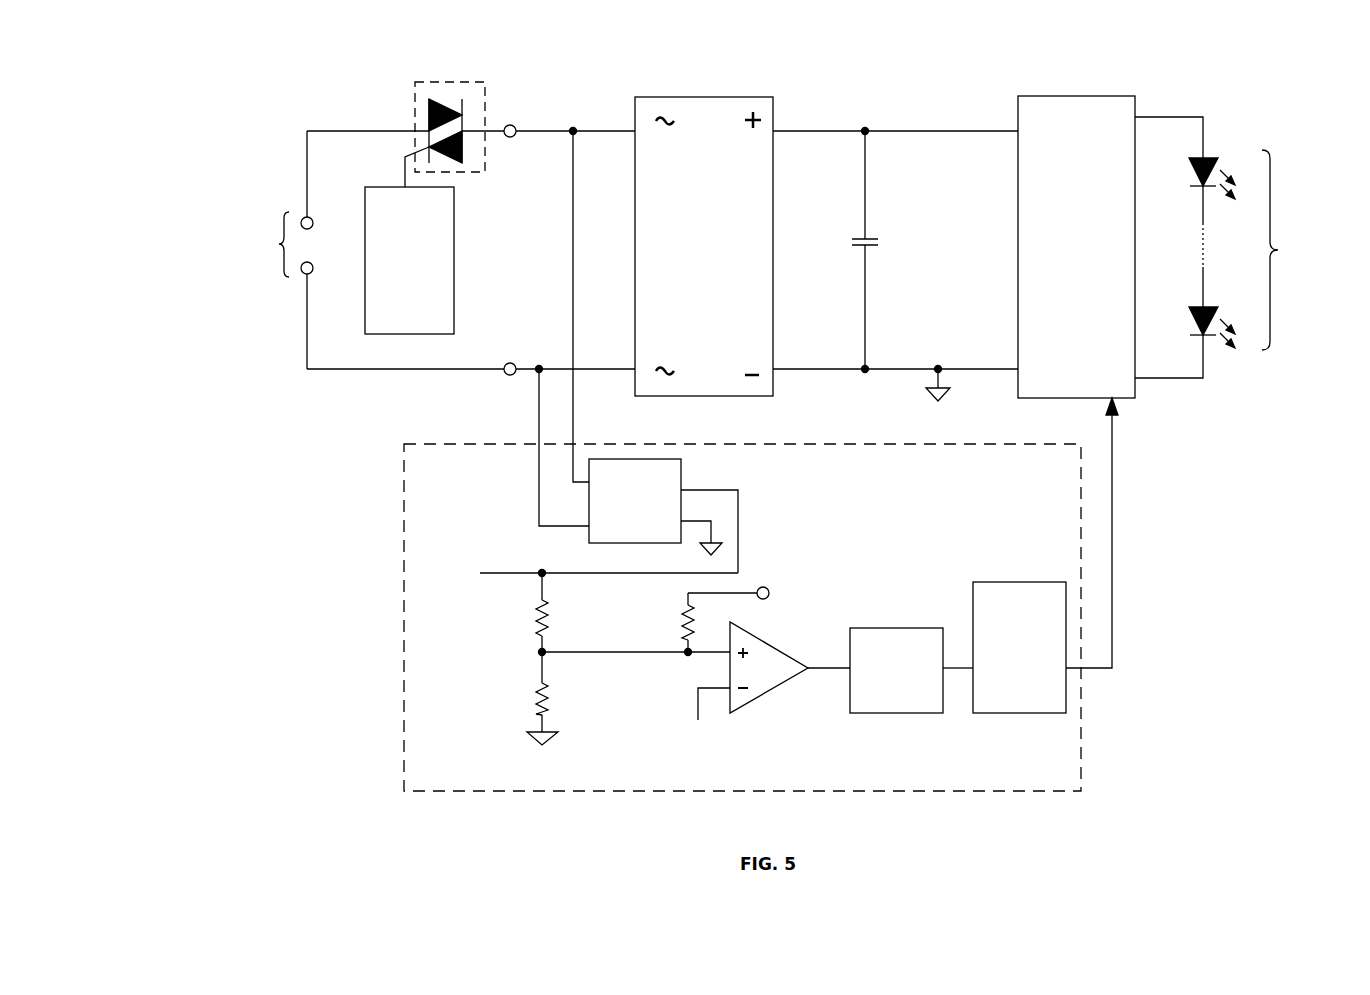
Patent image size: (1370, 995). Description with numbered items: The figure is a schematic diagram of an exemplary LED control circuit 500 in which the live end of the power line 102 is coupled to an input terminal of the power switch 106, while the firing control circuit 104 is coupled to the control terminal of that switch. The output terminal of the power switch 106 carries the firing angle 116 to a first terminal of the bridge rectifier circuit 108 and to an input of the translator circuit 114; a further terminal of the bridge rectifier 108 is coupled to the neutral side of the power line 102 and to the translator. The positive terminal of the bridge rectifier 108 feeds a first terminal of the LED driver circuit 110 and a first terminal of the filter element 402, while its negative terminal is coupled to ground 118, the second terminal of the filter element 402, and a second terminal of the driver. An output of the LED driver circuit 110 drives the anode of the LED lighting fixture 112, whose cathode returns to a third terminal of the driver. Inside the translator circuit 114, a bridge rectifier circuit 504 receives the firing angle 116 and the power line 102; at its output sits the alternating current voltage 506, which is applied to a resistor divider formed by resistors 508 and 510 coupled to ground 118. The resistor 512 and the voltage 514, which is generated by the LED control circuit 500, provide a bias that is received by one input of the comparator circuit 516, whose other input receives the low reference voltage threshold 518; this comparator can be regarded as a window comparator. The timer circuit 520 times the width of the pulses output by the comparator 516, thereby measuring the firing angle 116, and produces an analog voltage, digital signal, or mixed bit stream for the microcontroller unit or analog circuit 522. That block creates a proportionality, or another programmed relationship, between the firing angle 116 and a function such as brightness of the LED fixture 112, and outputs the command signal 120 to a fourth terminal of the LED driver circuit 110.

The LED control circuit 500 is at (262, 85).
The power line 102 is at (272, 232).
The firing control circuit 104 is at (394, 308).
The power switch 106 is at (462, 82).
The bridge rectifier circuit 108 is at (689, 280).
The LED driver circuit 110 is at (1061, 280).
The LED lighting fixture 112 is at (1224, 247).
The translator circuit 114 is at (404, 540).
The firing angle 116 is at (912, 129).
The ground 118 is at (946, 399).
The command signal 120 is at (1112, 580).
The filter element 402 is at (872, 237).
The bridge rectifier circuit 504 is at (619, 537).
The alternating current voltage (Vac) 506 is at (597, 573).
The resistor 508 is at (551, 621).
The resistor 510 is at (551, 700).
The resistor 512 is at (685, 618).
The voltage 514 is at (747, 581).
The comparator circuit 516 is at (777, 647).
The low reference voltage threshold (ref_low) 518 is at (700, 725).
The timer circuit 520 is at (881, 706).
The microcontroller unit (MCU) or analog circuit 522 is at (1004, 706).